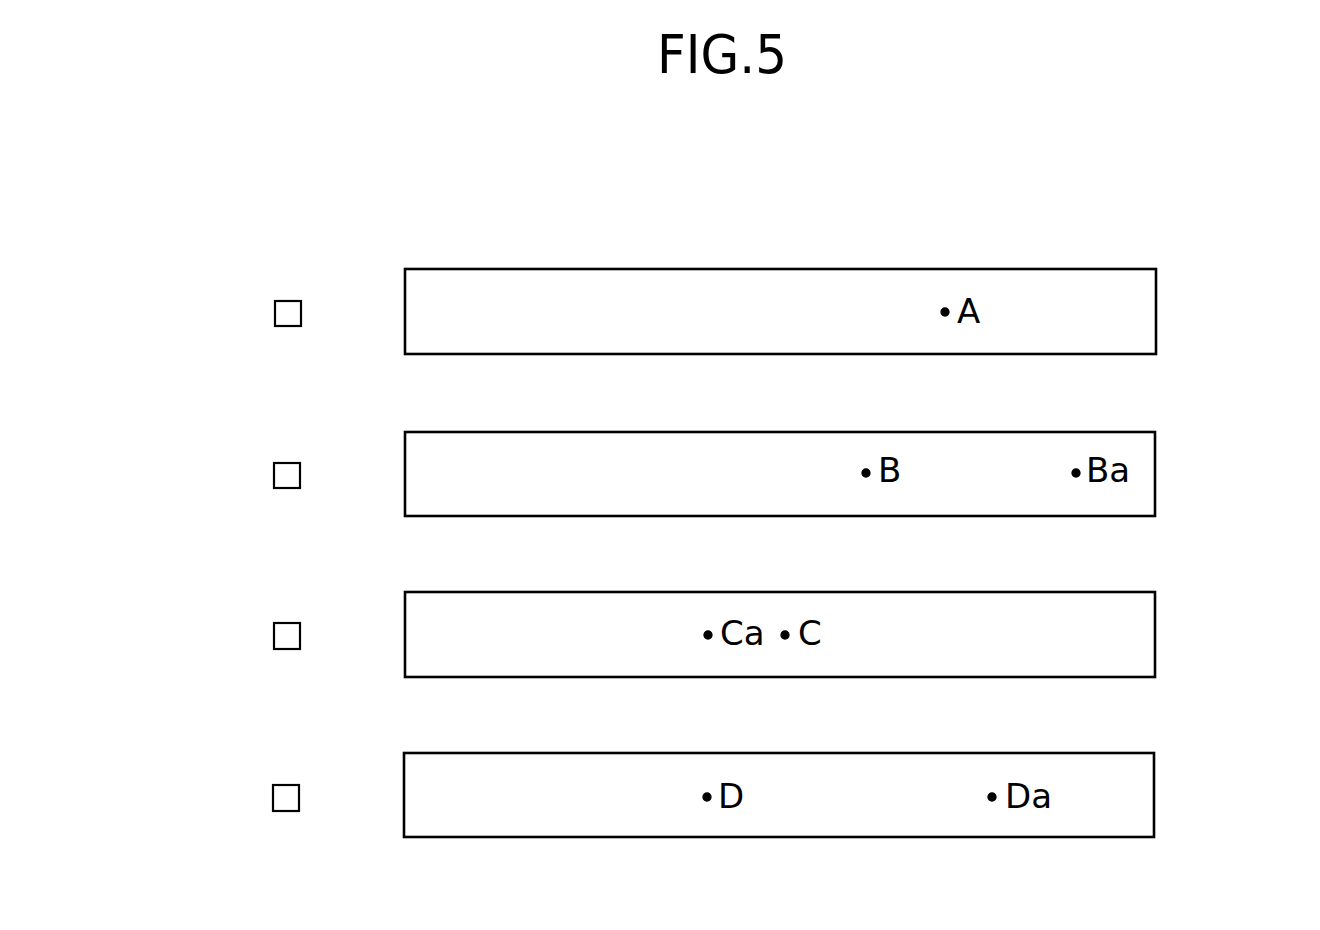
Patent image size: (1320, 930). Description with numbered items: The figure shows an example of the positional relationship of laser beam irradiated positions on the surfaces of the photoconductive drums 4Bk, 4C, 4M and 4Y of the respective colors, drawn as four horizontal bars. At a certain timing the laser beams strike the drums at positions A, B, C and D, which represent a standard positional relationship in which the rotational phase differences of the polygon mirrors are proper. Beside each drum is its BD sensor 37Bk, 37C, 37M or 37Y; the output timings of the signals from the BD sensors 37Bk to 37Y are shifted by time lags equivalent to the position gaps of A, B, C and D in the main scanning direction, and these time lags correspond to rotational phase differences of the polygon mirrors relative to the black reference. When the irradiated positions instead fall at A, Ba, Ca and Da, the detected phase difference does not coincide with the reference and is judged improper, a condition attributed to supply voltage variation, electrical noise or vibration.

The photoconductive drum (black) 4Bk is at (1156, 298).
The photoconductive drum (cyan) 4C is at (1155, 458).
The photoconductive drum (magenta) 4M is at (1155, 616).
The photoconductive drum (yellow) 4Y is at (1154, 788).
The BD sensor (black) 37Bk is at (275, 316).
The BD sensor (cyan) 37C is at (274, 479).
The BD sensor (magenta) 37M is at (274, 638).
The BD sensor (yellow) 37Y is at (273, 799).